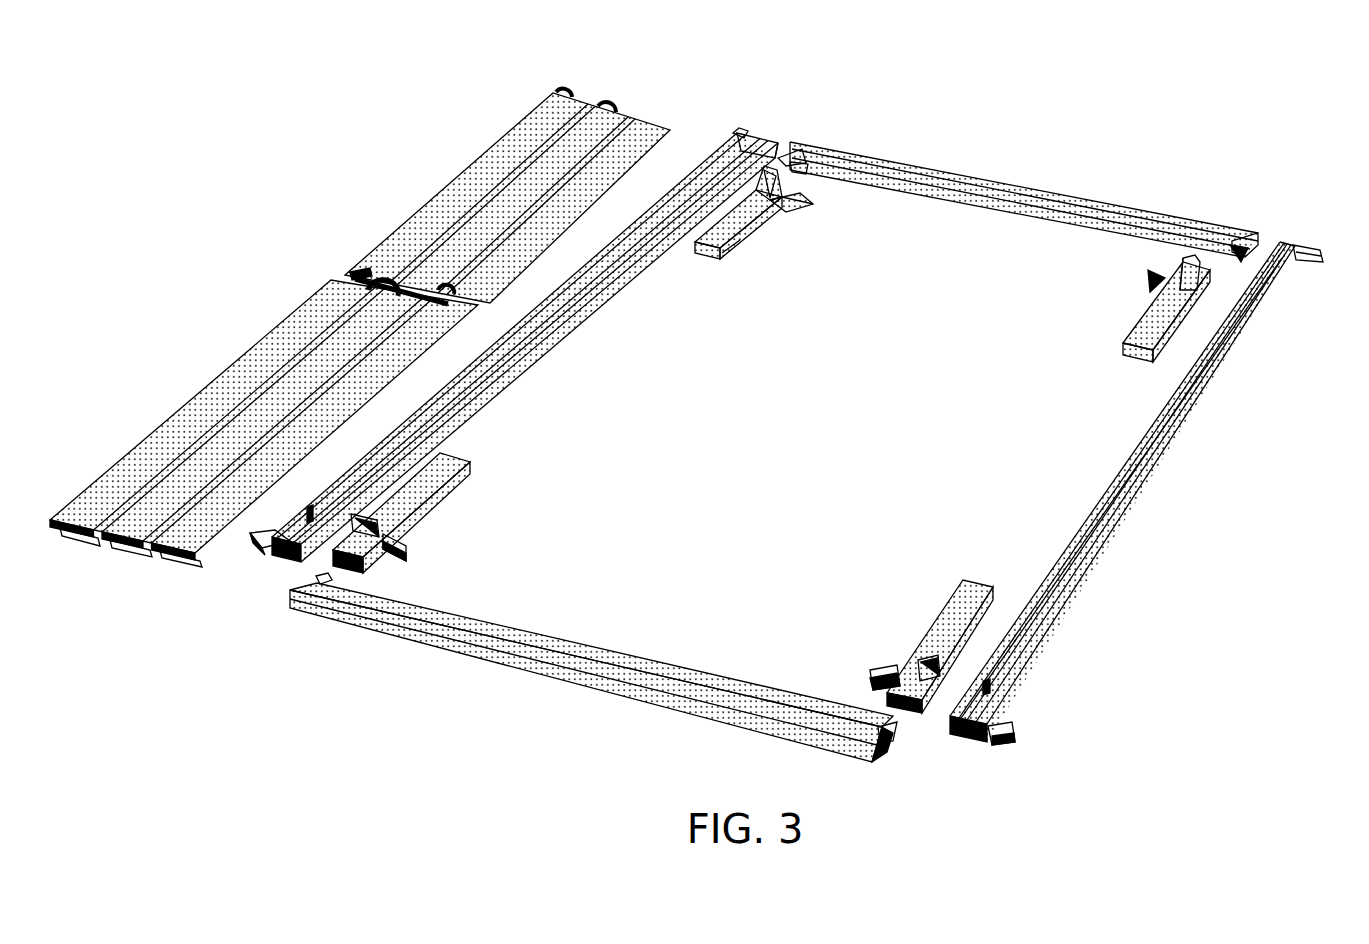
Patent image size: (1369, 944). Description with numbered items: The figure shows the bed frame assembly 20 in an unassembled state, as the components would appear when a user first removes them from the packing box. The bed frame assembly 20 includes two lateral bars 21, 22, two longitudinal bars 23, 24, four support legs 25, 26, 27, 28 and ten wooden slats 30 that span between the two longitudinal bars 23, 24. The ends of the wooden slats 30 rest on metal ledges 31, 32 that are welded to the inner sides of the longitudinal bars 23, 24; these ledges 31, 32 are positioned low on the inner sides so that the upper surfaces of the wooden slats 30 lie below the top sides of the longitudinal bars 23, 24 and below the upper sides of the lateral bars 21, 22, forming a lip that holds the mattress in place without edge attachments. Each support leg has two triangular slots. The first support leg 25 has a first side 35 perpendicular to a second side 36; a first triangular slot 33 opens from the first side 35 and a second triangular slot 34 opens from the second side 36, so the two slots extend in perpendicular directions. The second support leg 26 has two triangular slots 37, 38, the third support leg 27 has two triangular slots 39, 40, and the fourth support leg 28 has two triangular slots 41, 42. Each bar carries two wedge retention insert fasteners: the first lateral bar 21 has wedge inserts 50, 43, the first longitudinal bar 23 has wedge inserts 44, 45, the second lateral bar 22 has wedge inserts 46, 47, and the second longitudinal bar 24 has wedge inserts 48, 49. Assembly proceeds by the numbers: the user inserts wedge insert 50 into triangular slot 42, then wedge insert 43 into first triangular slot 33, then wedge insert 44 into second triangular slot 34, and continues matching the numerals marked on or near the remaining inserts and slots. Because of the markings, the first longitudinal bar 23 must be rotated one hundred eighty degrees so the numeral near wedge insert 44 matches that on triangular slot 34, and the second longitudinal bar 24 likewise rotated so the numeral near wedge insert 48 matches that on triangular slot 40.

The bed frame assembly 20 is at (1012, 98).
The first lateral bar 21 is at (977, 206).
The second lateral bar 22 is at (537, 726).
The first longitudinal bar 23 is at (594, 320).
The second longitudinal bar 24 is at (1108, 565).
The first support leg 25 is at (700, 258).
The second support leg 26 is at (470, 466).
The third support leg 27 is at (962, 586).
The fourth support leg 28 is at (1130, 355).
The wooden slats 30 is at (303, 280).
The metal ledge 31 is at (722, 164).
The metal ledge 32 is at (1287, 246).
The first triangular slot 33 is at (805, 209).
The second triangular slot 34 is at (784, 152).
The first side 35 is at (740, 250).
The second side 36 is at (716, 216).
The triangular slot 37 is at (346, 536).
The triangular slot 38 is at (404, 548).
The triangular slot 39 is at (882, 668).
The triangular slot 40 is at (923, 656).
The triangular slot 41 is at (1183, 262).
The triangular slot 42 is at (1148, 286).
The wedge insert 43 is at (803, 171).
The wedge insert 44 is at (270, 530).
The wedge insert 45 is at (742, 133).
The wedge insert 46 is at (316, 578).
The wedge insert 47 is at (885, 725).
The wedge insert 48 is at (1312, 262).
The wedge insert 49 is at (1004, 738).
The wedge insert 50 is at (1238, 262).